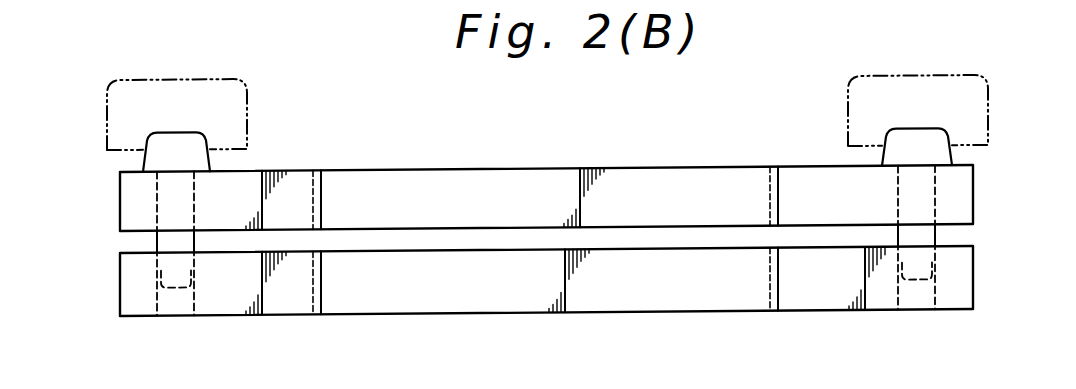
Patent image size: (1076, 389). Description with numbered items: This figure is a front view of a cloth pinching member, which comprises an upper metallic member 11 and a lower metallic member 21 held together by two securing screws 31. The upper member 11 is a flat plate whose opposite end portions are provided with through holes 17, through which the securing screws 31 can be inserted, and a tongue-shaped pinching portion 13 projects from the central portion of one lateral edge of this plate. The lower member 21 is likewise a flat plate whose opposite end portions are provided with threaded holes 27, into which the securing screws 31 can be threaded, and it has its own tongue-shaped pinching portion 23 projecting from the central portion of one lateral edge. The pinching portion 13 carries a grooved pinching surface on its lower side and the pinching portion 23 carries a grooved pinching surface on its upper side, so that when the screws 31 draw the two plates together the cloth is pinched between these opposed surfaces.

The upper metallic member 11 is at (698, 184).
The pinching portion 13 is at (505, 194).
The lower metallic member 21 is at (707, 298).
The pinching portion 23 is at (482, 294).
The through hole 17 is at (194, 199).
The threaded hole 27 is at (196, 292).
The securing screw 31 is at (248, 100).